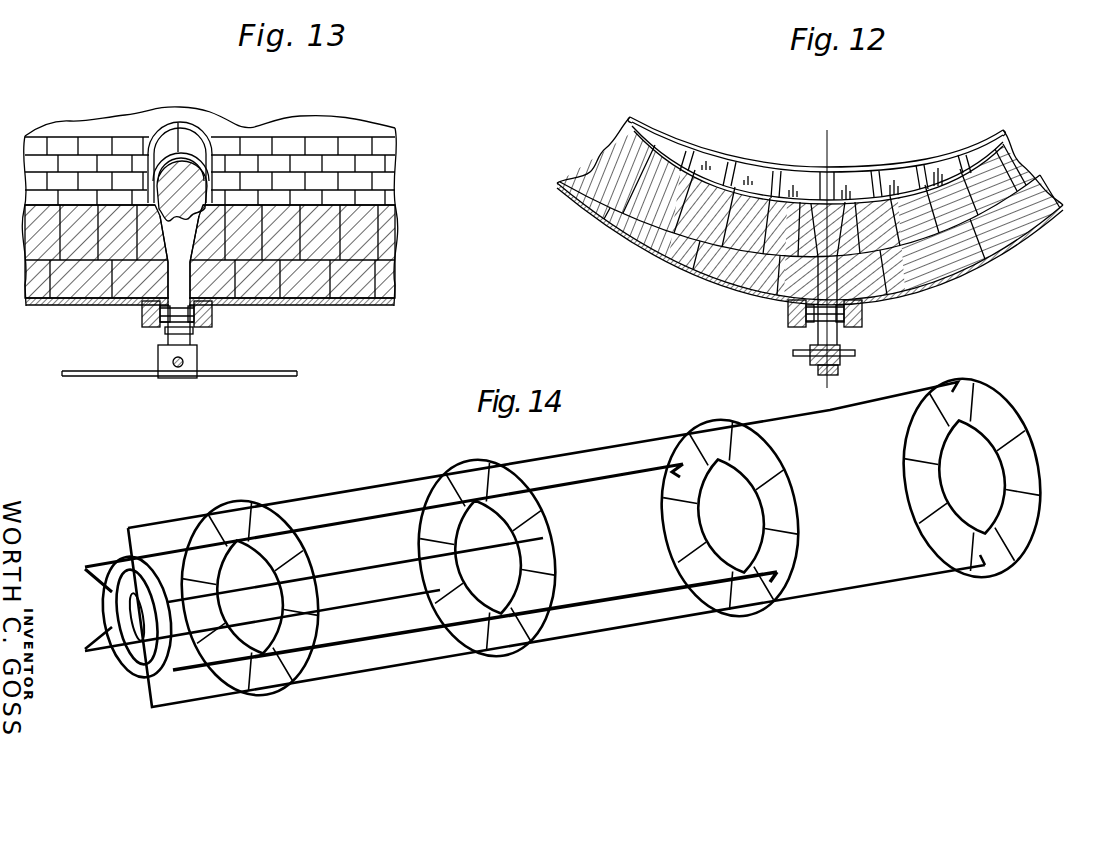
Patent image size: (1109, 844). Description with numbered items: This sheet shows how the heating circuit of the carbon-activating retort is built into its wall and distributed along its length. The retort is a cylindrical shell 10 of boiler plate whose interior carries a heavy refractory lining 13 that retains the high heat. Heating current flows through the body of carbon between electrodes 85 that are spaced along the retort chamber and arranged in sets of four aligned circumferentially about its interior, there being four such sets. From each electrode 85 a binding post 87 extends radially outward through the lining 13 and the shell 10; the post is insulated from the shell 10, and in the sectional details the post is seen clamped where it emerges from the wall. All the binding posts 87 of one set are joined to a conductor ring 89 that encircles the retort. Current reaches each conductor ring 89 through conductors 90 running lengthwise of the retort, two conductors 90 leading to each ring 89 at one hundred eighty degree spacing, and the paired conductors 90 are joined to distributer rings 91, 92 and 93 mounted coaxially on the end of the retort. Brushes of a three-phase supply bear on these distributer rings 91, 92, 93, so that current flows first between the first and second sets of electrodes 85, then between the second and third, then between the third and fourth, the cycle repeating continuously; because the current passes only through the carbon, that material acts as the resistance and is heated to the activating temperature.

In FIG. 13, the cylindrical shell 10 is at (332, 305).
In FIG. 12, the cylindrical shell 10 is at (950, 279).
In FIG. 12, the refractory lining 13 is at (831, 252).
In FIG. 13, the electrodes 85 is at (233, 140).
In FIG. 12, the electrodes 85 is at (858, 180).
In FIG. 14, the electrodes 85 is at (516, 528).
In FIG. 13, the binding post 87 is at (141, 311).
In FIG. 12, the binding post 87 is at (788, 303).
In FIG. 14, the binding post 87 is at (536, 591).
In FIG. 13, the conductor ring 89 is at (175, 358).
In FIG. 12, the conductor ring 89 is at (850, 352).
In FIG. 14, the conductor ring 89 is at (549, 632).
In FIG. 13, the conductors 90 is at (290, 377).
In FIG. 12, the conductors 90 is at (800, 356).
In FIG. 14, the conductors 90 is at (352, 565).
In FIG. 14, the distributer ring 91 is at (118, 663).
In FIG. 14, the distributer ring 92 is at (136, 674).
In FIG. 14, the distributer ring 93 is at (131, 615).